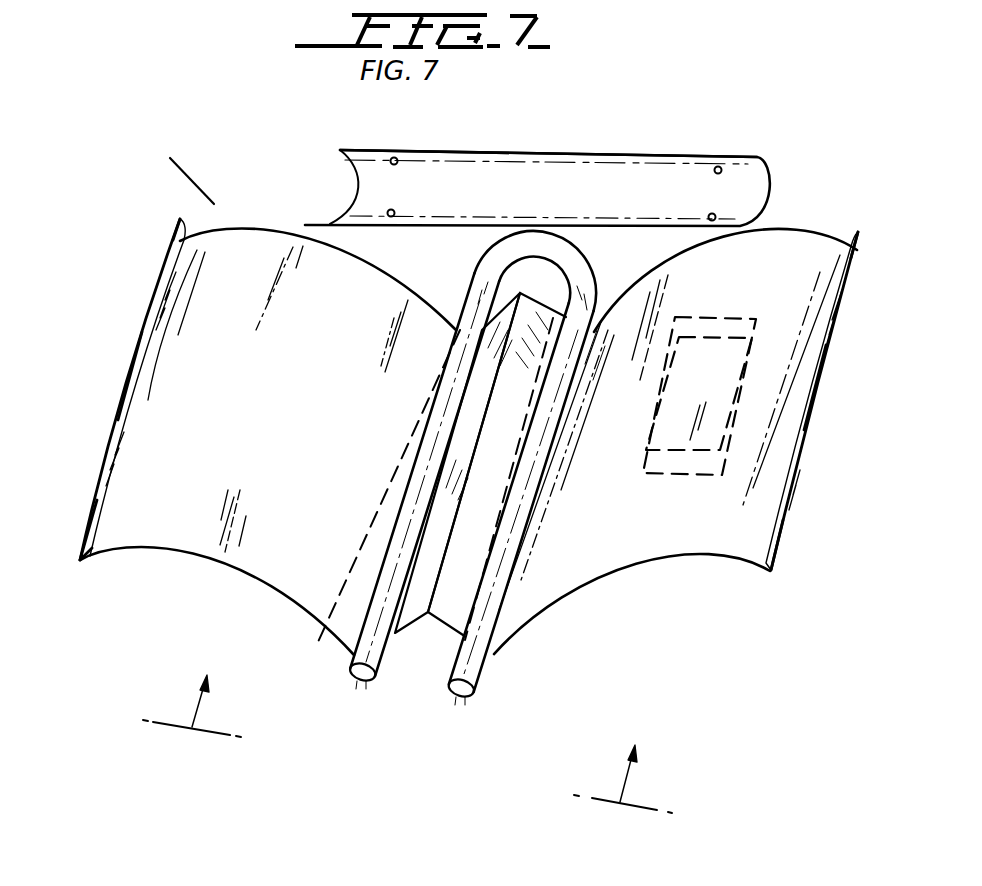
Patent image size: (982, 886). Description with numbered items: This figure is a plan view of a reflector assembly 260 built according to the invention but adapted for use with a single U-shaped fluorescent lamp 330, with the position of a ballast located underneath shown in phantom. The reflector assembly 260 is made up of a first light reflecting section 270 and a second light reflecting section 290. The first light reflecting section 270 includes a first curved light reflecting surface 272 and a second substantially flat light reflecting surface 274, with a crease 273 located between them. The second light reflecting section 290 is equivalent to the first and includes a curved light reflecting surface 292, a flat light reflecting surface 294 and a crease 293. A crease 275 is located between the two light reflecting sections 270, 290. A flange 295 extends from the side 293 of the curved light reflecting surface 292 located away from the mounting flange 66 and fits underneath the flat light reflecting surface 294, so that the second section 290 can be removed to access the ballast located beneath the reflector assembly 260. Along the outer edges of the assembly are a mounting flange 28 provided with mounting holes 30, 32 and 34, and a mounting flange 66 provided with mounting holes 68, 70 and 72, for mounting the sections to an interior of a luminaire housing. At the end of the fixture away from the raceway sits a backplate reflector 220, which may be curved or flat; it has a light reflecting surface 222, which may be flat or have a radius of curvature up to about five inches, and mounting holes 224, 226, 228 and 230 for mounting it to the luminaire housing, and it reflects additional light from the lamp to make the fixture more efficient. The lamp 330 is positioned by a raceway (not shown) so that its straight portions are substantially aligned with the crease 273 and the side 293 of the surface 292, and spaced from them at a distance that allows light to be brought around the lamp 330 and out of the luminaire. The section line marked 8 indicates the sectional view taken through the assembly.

The reflector assembly 260 is at (218, 209).
The backplate reflector 220 is at (537, 154).
The light reflecting surface 222 is at (576, 204).
The mounting hole 224 is at (398, 160).
The mounting hole 226 is at (388, 212).
The mounting hole 228 is at (722, 166).
The mounting hole 230 is at (716, 215).
The first light reflecting section 270 is at (262, 574).
The first curved light reflecting surface 272 is at (290, 408).
The crease 273 is at (318, 642).
The second substantially flat light reflecting surface 274 is at (467, 422).
The crease 275 is at (453, 518).
The second light reflecting section 290 is at (624, 568).
The curved light reflecting surface 292 is at (765, 291).
The crease 293 is at (507, 600).
The flat light reflecting surface 294 is at (487, 453).
The flange 295 is at (458, 636).
The U-shaped fluorescent lamp 330 is at (482, 261).
The mounting flange 28 is at (144, 322).
The mounting hole 30 is at (85, 548).
The mounting hole 32 is at (128, 376).
The mounting hole 34 is at (176, 243).
The mounting flange 66 is at (834, 341).
The mounting hole 68 is at (775, 548).
The mounting hole 70 is at (812, 407).
The mounting hole 72 is at (856, 252).
The section line 8- 8 is at (407, 730).